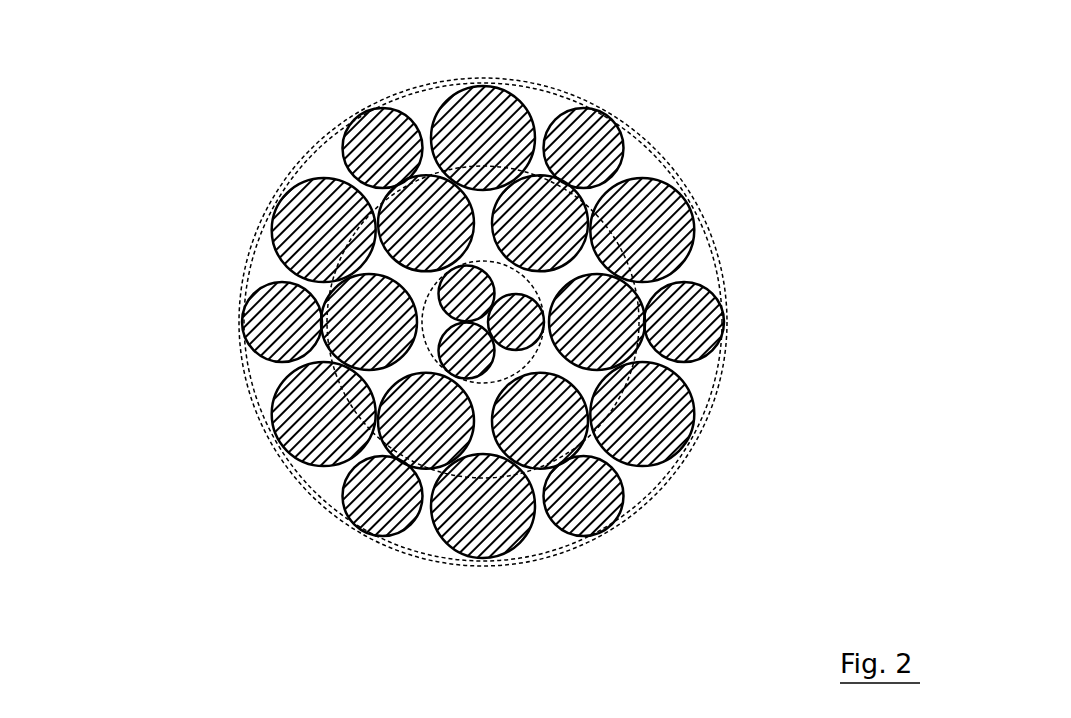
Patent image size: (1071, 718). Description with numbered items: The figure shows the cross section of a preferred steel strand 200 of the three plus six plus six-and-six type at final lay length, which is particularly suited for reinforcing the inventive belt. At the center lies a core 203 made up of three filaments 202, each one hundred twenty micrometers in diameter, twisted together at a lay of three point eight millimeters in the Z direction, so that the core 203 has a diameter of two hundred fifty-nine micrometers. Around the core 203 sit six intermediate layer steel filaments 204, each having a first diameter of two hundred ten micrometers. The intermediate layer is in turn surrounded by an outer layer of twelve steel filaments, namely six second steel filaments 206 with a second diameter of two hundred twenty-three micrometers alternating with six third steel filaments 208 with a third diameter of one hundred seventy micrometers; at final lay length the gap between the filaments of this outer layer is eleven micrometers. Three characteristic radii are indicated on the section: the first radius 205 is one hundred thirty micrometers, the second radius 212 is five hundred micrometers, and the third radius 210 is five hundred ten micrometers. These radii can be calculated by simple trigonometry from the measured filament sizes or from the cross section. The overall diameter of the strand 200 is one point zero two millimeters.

The steel strand 200 is at (190, 122).
The filaments 202 is at (457, 291).
The core 203 is at (432, 353).
The intermediate layer steel filaments 204 is at (367, 328).
The first radius 205 is at (385, 453).
The second steel filaments 206 is at (638, 230).
The third steel filaments 208 is at (590, 152).
The third radius 210 is at (715, 395).
The second radius 212 is at (663, 480).